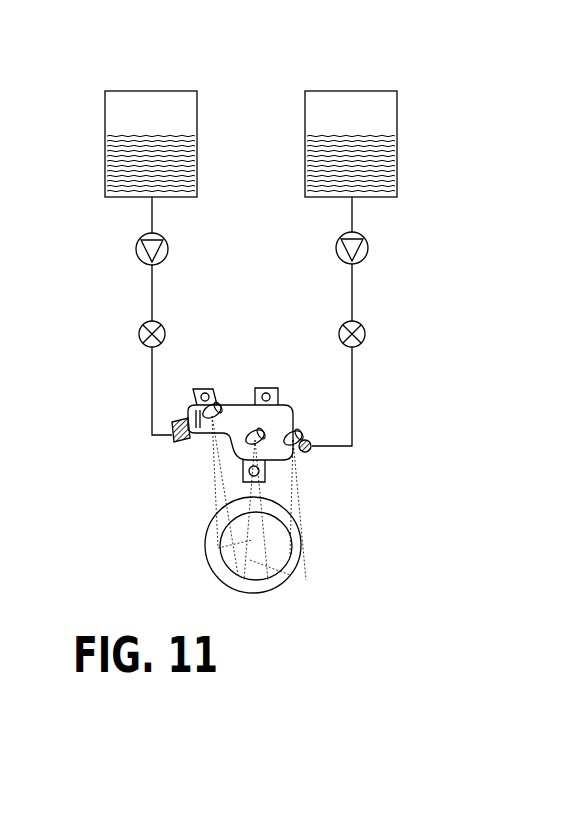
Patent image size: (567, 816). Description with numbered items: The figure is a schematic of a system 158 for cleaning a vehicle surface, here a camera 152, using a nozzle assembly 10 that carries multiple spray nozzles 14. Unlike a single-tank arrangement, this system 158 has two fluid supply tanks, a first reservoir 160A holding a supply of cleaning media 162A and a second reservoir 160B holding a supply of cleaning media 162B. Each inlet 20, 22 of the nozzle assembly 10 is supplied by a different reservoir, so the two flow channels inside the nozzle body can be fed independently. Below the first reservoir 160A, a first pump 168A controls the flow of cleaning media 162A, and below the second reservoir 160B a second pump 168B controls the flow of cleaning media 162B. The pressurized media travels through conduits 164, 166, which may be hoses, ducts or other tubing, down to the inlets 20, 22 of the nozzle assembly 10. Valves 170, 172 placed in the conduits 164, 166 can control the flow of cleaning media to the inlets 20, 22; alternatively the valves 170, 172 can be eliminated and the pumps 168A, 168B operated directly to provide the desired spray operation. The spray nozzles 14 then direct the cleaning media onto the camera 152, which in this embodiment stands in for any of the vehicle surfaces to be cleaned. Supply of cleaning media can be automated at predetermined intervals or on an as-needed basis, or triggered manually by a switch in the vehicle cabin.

The system for cleaning a vehicle surface 158 is at (77, 140).
The first reservoir 160A is at (197, 100).
The second reservoir 160B is at (397, 100).
The cleaning media 162A is at (172, 172).
The cleaning media 162B is at (370, 167).
The first pump 168A is at (168, 249).
The second pump 168B is at (368, 248).
The valve 170 is at (140, 334).
The valve 172 is at (365, 333).
The conduit 164 is at (145, 366).
The conduit 166 is at (358, 368).
The nozzle assembly 10 is at (298, 397).
The spray nozzles 14 is at (290, 437).
The cleaning media inlet 20 is at (172, 441).
The cleaning media inlet 22 is at (312, 451).
The camera 152 is at (302, 548).